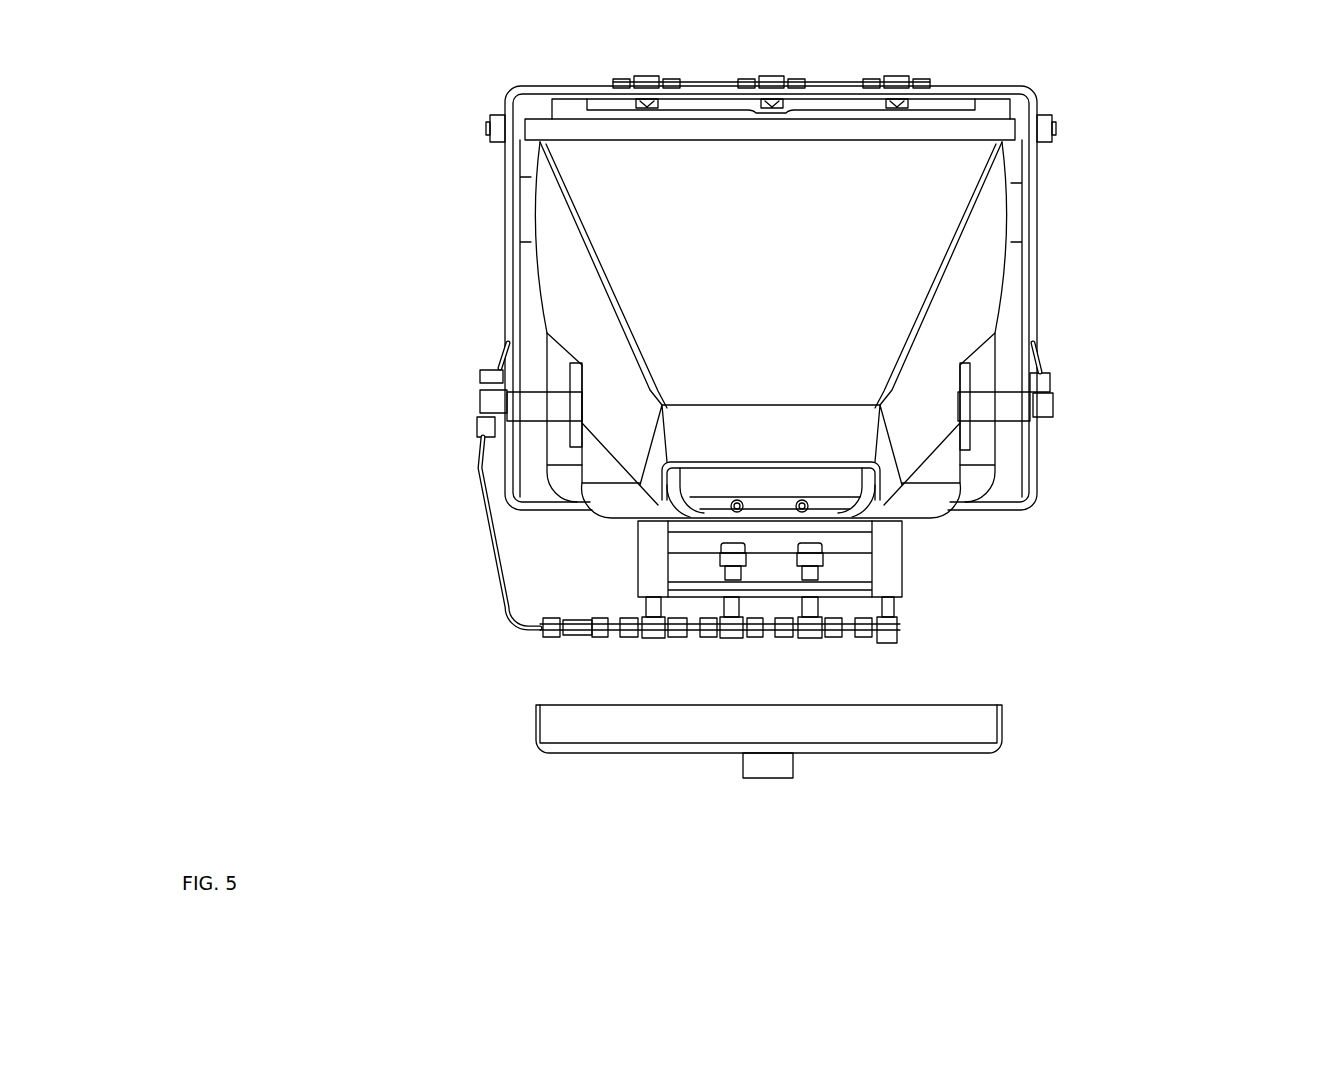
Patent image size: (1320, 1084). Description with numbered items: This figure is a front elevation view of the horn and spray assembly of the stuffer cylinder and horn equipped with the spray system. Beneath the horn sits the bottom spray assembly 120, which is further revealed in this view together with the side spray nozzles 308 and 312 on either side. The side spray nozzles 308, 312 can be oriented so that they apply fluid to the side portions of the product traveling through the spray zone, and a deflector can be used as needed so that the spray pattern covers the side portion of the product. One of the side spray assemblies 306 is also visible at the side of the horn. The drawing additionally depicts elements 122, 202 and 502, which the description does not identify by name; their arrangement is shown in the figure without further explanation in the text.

The bottom spray assembly 120 is at (898, 568).
The supply tube 122 is at (534, 722).
The fastener bolt 202 is at (720, 577).
The side spray assembly 306 is at (998, 420).
The side spray nozzle 308 is at (1046, 397).
The side spray nozzle 312 is at (488, 392).
The fitting manifold 502 is at (890, 640).